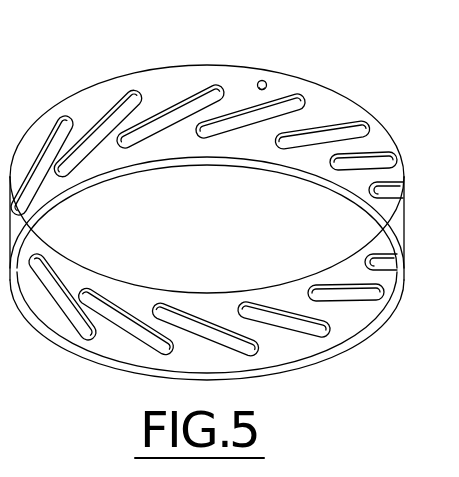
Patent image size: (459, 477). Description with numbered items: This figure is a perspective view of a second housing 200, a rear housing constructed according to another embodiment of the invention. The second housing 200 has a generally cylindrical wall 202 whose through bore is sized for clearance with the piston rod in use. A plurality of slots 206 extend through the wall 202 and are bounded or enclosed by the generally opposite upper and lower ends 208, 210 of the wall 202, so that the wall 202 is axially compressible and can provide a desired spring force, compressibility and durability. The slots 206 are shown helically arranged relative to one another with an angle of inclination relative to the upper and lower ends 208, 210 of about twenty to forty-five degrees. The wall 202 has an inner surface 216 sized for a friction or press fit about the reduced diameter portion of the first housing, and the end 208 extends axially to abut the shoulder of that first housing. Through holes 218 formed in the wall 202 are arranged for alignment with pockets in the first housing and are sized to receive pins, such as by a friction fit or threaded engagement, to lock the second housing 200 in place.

The second housing 200 is at (219, 44).
The cylindrical wall 202 is at (339, 100).
The slots 206 is at (103, 117).
The upper end 208 is at (160, 64).
The lower end 210 is at (70, 351).
The inner surface 216 is at (89, 274).
The through holes 218 is at (267, 83).